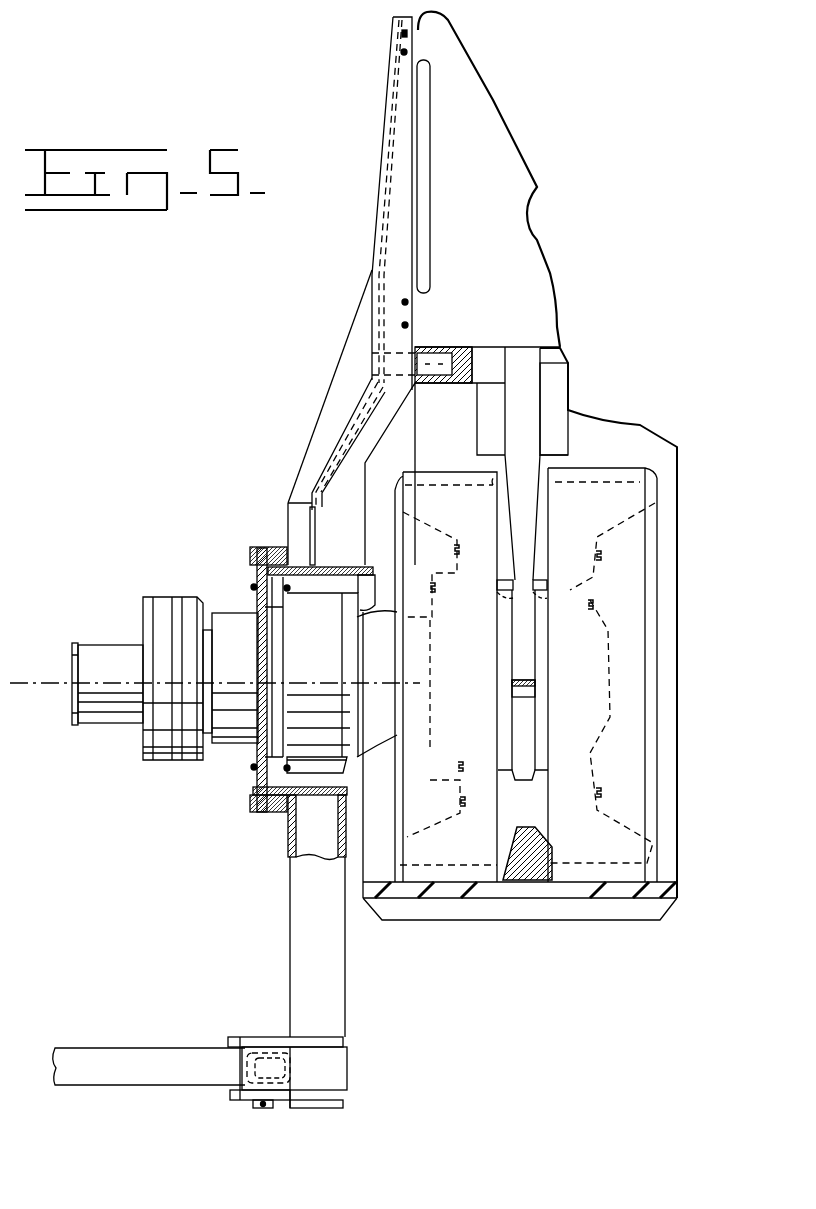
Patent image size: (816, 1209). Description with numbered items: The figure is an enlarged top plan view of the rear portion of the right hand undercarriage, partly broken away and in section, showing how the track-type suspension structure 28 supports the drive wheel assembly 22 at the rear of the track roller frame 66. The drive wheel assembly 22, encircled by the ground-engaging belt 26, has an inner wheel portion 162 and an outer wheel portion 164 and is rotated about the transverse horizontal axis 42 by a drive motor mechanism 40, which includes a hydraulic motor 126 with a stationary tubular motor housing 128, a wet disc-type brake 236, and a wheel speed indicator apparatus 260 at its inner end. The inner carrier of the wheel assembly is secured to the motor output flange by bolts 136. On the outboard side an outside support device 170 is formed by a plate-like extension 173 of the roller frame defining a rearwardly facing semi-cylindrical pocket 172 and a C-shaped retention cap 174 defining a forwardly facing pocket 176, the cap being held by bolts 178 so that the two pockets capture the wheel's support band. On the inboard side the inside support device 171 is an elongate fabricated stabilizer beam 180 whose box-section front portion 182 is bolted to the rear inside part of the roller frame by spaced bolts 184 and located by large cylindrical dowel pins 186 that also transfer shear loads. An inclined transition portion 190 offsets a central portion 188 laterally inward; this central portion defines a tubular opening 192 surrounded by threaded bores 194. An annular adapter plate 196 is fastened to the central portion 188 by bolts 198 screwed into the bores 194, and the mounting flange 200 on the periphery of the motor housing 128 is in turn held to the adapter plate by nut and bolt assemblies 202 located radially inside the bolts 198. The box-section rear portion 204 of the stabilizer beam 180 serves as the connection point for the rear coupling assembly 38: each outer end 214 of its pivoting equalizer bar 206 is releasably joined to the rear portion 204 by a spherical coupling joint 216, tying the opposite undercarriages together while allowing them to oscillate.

The drive wheel assembly 22 is at (610, 883).
The ground-engaging track or belt 26 is at (488, 912).
The track-type suspension structure 28 is at (112, 356).
The rear coupling assembly 38 is at (352, 1065).
The drive motor mechanism 40 is at (228, 750).
The transverse and horizontal axis 42 is at (52, 650).
The track roller frame 66 is at (500, 91).
The hydraulic motor 126 is at (325, 760).
The motor housing 128 is at (316, 598).
The threaded fasteners or bolts 136 is at (425, 612).
The inner wheel portion 162 is at (470, 474).
The outer wheel portion 164 is at (632, 476).
The outside support device 170 is at (545, 400).
The inside support device 171 is at (332, 446).
The rearwardly facing semi-cylindrical pocket 172 is at (590, 582).
The plate-like extension 173 is at (527, 527).
The C-shaped retention cap 174 is at (528, 712).
The forwardly facing semi-cylindrical pocket 176 is at (583, 750).
The threaded fasteners or bolts 178 is at (530, 690).
The stabilizer beam 180 is at (286, 848).
The front portion 182 is at (392, 193).
The threaded fasteners or bolts 184 is at (401, 52).
The cylindrical dowel pins 186 is at (437, 358).
The central portion 188 is at (302, 505).
The inclined transition portion 190 is at (365, 420).
The tubular opening 192 is at (372, 598).
The threaded bores 194 is at (266, 805).
The annular adapter plate 196 is at (262, 547).
The threaded fasteners or bolts 198 is at (260, 556).
The mounting flange 200 is at (276, 662).
The nut and bolt assemblies 202 is at (255, 785).
The rear portion 204 is at (312, 932).
The equalizer bar 206 is at (157, 1048).
The outer end 214 is at (245, 1082).
The spherical coupling joint 216 is at (245, 1067).
The wet disc-type brake 236 is at (190, 597).
The wheel speed indicator apparatus 260 is at (130, 607).